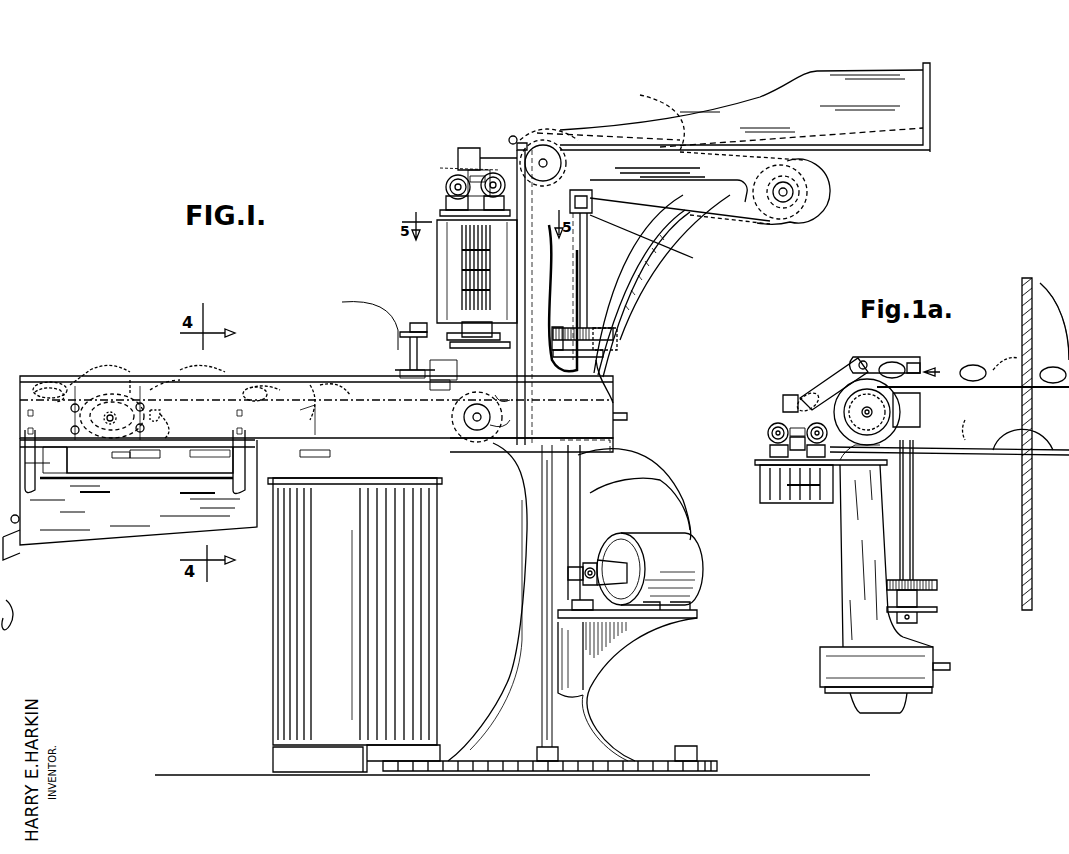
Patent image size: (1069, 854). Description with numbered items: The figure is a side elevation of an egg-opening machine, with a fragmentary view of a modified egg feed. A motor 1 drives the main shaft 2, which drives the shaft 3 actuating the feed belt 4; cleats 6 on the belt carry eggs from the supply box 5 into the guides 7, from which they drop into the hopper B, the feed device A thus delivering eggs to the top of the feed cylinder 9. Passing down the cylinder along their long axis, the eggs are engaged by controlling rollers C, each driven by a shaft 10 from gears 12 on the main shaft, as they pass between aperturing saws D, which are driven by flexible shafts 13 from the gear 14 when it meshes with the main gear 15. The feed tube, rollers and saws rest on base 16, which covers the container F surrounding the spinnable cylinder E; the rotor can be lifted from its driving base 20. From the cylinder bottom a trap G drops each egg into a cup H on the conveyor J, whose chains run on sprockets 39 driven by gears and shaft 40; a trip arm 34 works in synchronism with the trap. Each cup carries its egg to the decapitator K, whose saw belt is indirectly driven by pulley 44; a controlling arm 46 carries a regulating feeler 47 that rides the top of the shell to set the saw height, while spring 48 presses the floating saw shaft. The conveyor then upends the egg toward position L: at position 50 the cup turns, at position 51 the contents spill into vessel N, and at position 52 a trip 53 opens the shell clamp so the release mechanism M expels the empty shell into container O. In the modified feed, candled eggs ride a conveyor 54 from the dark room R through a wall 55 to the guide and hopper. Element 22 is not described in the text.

In FIG. 1, the motor 1 is at (700, 573).
In FIG. 1, the shaft 2 is at (652, 472).
In FIG. 1a, the shaft 2 is at (914, 541).
In FIG. 1, the shaft 3 is at (546, 160).
In FIG. 1, the feed belt 4 is at (762, 222).
In FIG. 1, the supply box 5 is at (787, 104).
In FIG. 1, the cleats 6 is at (790, 224).
In FIG. 1a, the guides 7 is at (847, 360).
In FIG. 1, the feed cylinder 9 is at (444, 187).
In FIG. 1a, the feed cylinder 9 is at (790, 430).
In FIG. 1, the shaft 10 is at (488, 180).
In FIG. 1, the gears 12 is at (657, 275).
In FIG. 1, the flexible shafts 13 is at (590, 272).
In FIG. 1, the gear 14 is at (612, 312).
In FIG. 1, the main gear 15 is at (568, 323).
In FIG. 1a, the main gear 15 is at (937, 586).
In FIG. 1, the base 16 is at (380, 255).
In FIG. 1a, the base 16 is at (760, 463).
In FIG. 1, the driving base 20 is at (522, 372).
In FIG. 1, the plate 22 is at (470, 330).
In FIG. 1, the trip arm 34 is at (214, 358).
In FIG. 1, the sprockets 39 is at (497, 432).
In FIG. 1, the gears and shaft 40 is at (602, 452).
In FIG. 1, the pulley 44 is at (603, 354).
In FIG. 1a, the pulley 44 is at (937, 609).
In FIG. 1, the controlling arm 46 is at (410, 378).
In FIG. 1, the regulating feeler 47 is at (438, 390).
In FIG. 1, the spring 48 is at (420, 323).
In FIG. 1, the position 50 is at (68, 380).
In FIG. 1, the position 51 is at (128, 453).
In FIG. 1, the position 52 is at (312, 455).
In FIG. 1, the trip 53 is at (320, 380).
In FIG. 1a, the conveyor 54 is at (995, 452).
In FIG. 1a, the wall 55 is at (1027, 300).
In FIG. 1, the feed device A is at (656, 113).
In FIG. 1, the hopper B is at (457, 158).
In FIG. 1a, the hopper B is at (785, 405).
In FIG. 1, the controlling rollers C is at (446, 192).
In FIG. 1a, the controlling rollers C is at (835, 400).
In FIG. 1, the aperturing saws D is at (440, 168).
In FIG. 1, the cylinder E is at (457, 250).
In FIG. 1, the container F is at (462, 325).
In FIG. 1a, the container F is at (760, 490).
In FIG. 1, the trap G is at (593, 373).
In FIG. 1, the cups H is at (280, 385).
In FIG. 1, the conveyor J is at (130, 380).
In FIG. 1, the decapitator K is at (398, 355).
In FIG. 1, the position L is at (147, 455).
In FIG. 1, the release mechanism M is at (322, 385).
In FIG. 1, the vessel N is at (98, 527).
In FIG. 1, the container O is at (292, 640).
In FIG. 1a, the dark room R is at (1038, 458).